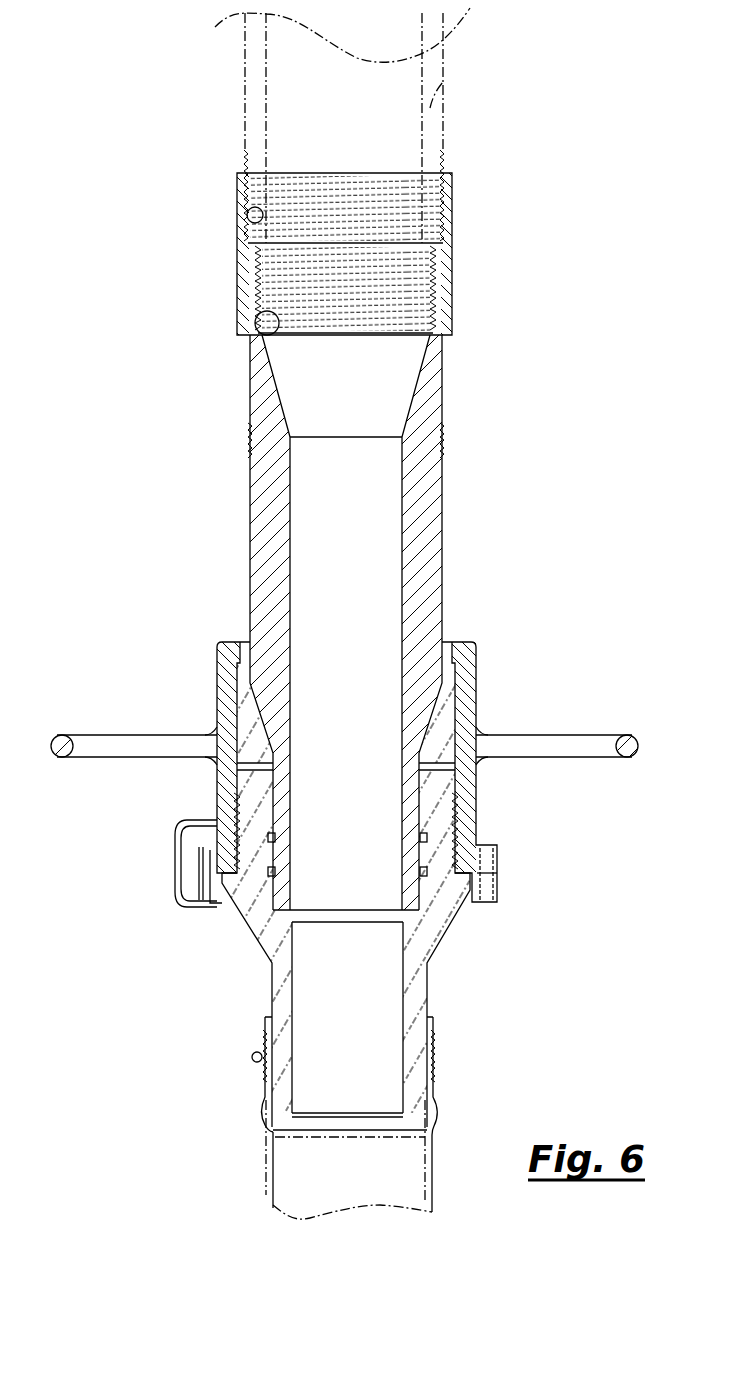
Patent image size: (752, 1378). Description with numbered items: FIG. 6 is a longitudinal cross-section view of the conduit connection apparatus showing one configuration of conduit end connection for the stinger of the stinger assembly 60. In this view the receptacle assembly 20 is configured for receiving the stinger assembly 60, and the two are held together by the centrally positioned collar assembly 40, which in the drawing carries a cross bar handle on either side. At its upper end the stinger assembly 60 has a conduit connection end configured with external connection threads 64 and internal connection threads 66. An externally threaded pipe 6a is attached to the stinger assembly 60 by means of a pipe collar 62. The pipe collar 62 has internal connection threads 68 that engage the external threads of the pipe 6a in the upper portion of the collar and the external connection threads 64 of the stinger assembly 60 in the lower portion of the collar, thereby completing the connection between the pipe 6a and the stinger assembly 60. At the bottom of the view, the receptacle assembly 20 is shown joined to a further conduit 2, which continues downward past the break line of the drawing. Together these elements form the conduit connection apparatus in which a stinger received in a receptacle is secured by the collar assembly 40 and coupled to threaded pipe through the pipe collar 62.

The pipe 2 is at (268, 1163).
The externally threaded pipe 6a is at (445, 80).
The receptacle assembly 20 is at (445, 972).
The collar assembly 40 is at (205, 703).
The stinger assembly 60 is at (460, 546).
The pipe collar 62 is at (452, 245).
The external connection threads 64 is at (440, 287).
The internal connection threads 66 is at (278, 313).
The internal connection threads 68 is at (250, 225).